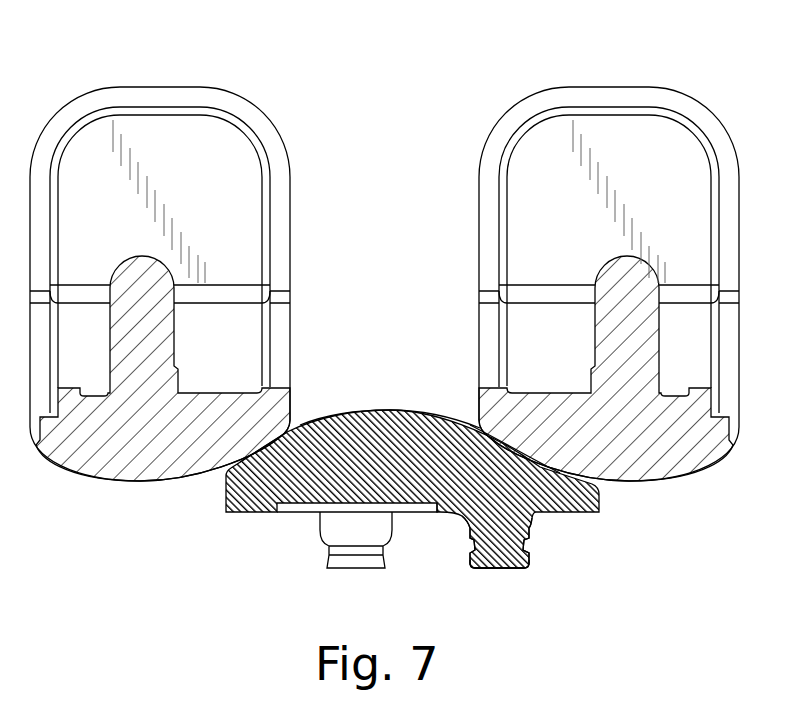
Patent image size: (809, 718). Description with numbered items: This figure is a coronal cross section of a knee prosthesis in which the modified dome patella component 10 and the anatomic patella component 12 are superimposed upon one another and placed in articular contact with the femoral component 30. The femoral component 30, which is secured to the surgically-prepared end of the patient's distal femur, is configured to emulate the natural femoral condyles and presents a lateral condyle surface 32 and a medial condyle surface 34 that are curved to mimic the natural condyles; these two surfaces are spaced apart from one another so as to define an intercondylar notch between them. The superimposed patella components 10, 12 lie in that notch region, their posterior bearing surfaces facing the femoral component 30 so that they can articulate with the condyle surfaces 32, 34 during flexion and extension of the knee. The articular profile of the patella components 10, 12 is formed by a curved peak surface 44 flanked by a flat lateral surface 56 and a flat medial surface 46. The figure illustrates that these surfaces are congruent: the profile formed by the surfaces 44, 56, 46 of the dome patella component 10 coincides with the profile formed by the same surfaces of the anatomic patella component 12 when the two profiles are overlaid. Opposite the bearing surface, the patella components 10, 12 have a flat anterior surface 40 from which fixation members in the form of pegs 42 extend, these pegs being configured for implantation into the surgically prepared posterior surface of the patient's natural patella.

The modified dome patella component 10 is at (397, 491).
The anatomic patella component 12 is at (397, 491).
The femoral component 30 is at (160, 287).
The lateral condyle surface 32 is at (623, 484).
The medial condyle surface 34 is at (170, 481).
The flat anterior surface 40 is at (568, 515).
The pegs 42 is at (505, 570).
The curved peak surface 44 is at (347, 414).
The flat medial surface 46 is at (303, 428).
The flat lateral surface 56 is at (460, 425).